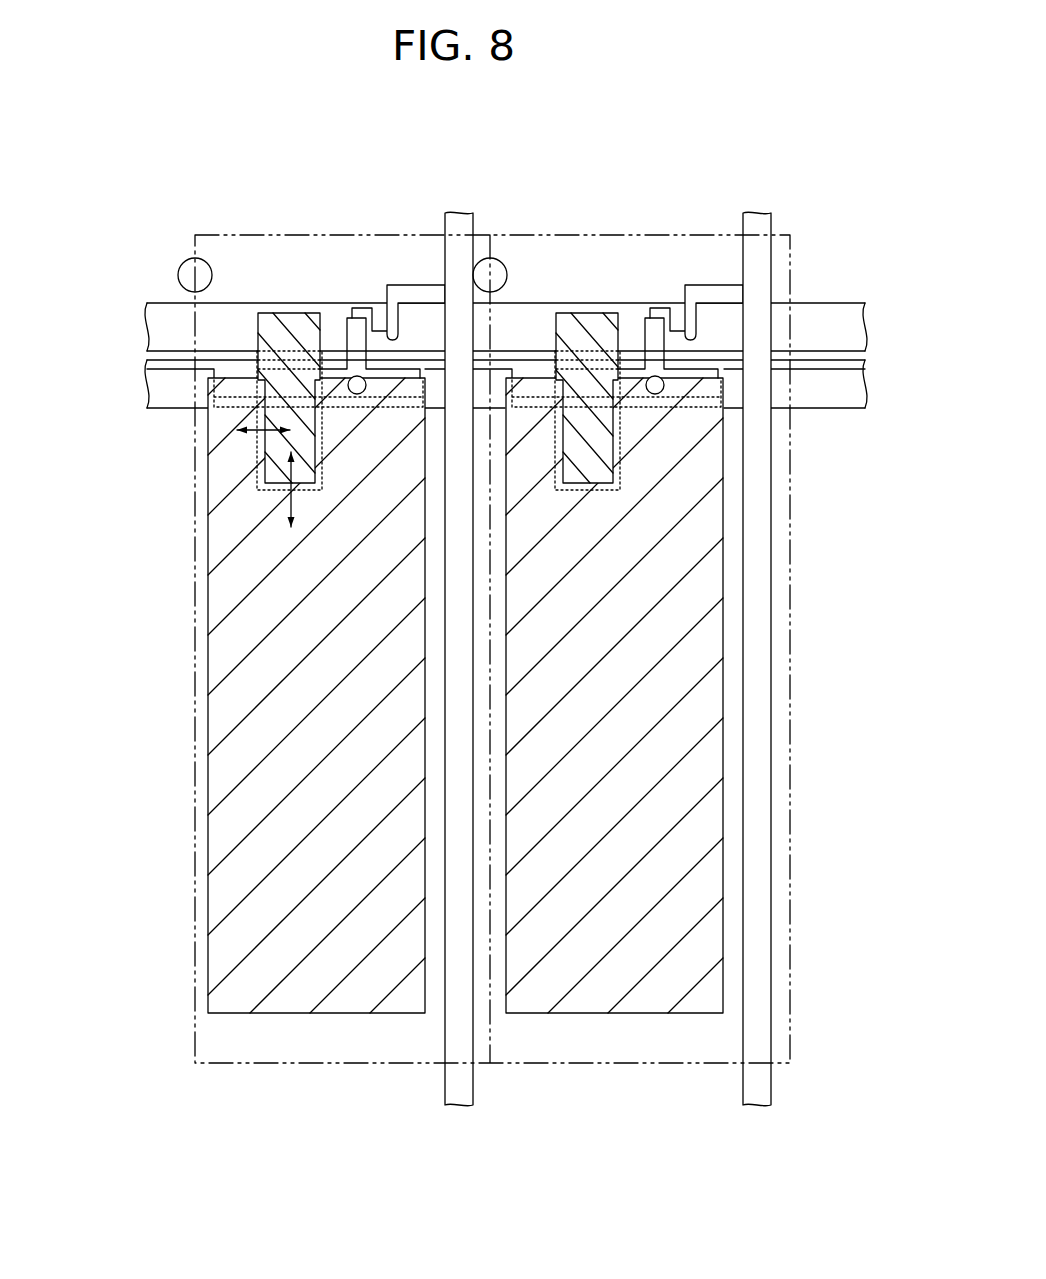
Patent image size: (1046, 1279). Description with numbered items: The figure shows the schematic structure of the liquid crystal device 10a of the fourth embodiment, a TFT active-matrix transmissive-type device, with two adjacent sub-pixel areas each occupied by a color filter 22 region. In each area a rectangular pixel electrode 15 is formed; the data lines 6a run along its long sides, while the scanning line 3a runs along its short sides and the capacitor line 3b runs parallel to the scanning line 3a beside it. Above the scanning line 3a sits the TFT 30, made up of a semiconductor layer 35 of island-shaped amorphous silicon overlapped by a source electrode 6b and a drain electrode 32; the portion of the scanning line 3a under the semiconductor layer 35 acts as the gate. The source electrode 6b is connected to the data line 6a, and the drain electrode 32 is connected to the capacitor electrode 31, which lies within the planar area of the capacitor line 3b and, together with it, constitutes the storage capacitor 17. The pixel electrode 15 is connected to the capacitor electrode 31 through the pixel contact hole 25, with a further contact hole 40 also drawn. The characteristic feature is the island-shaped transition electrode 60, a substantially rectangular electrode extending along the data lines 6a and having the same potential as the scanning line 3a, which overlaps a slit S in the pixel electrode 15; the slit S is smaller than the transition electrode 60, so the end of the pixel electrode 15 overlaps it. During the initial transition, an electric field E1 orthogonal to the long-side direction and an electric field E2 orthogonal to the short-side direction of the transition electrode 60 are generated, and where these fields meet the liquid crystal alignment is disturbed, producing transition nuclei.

The electro-optical device (pixel structure) 10a is at (688, 125).
The color filter 22 is at (263, 235).
The TFT 30 is at (364, 300).
The semiconductor layer 35 is at (381, 330).
The source electrode 6b is at (393, 283).
The data line 6a is at (460, 1112).
The contact hole 40 is at (185, 261).
The transition electrode 60 is at (274, 316).
The drain electrode 32 is at (348, 332).
The scanning line 3a is at (163, 325).
The capacitor electrode 31 is at (163, 372).
The capacitor line 3b is at (163, 388).
The storage capacitor 17 is at (195, 398).
The electric field E1 is at (230, 432).
The slit S is at (302, 438).
The electric field E2 is at (284, 520).
The pixel contact hole 25 is at (360, 394).
The pixel electrode 15 is at (222, 833).